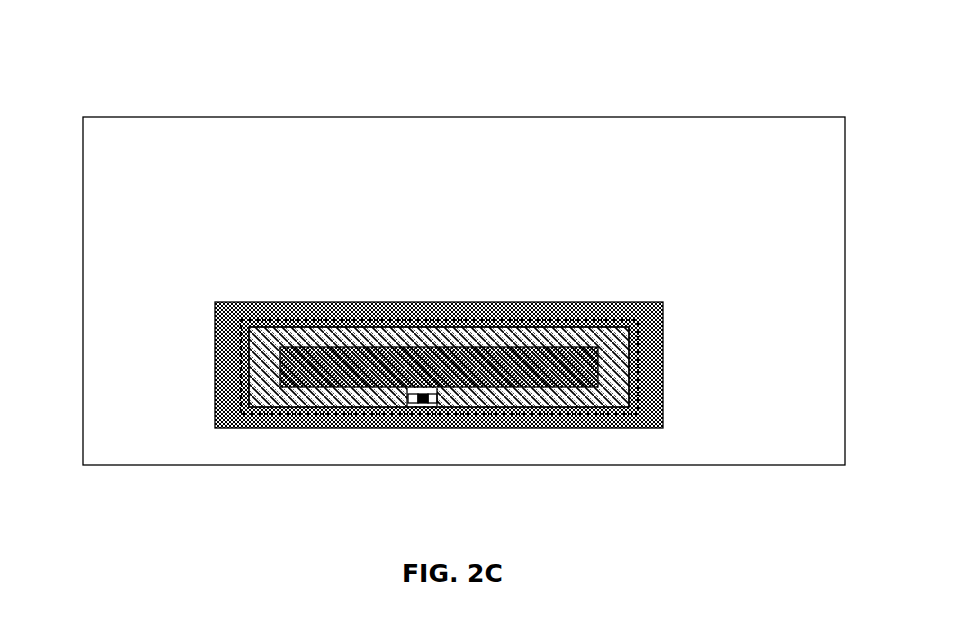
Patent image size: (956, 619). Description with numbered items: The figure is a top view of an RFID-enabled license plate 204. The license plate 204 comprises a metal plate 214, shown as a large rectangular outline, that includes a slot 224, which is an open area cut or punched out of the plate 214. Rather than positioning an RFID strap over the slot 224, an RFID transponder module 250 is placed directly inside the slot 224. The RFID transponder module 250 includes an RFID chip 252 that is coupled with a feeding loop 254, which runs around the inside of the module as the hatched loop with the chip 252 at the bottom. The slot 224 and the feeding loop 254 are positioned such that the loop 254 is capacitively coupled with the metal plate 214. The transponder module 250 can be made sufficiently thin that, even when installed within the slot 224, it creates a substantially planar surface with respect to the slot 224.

The RFID-enabled license plate 204 is at (463, 281).
The metal plate 214 is at (582, 117).
The slot 224 is at (650, 302).
The RFID transponder module 250 is at (242, 413).
The RFID chip 252 is at (427, 400).
The feeding loop 254 is at (528, 330).